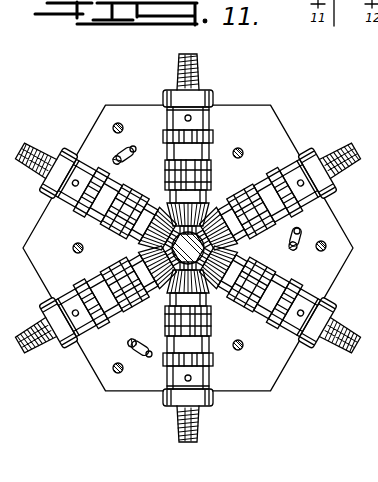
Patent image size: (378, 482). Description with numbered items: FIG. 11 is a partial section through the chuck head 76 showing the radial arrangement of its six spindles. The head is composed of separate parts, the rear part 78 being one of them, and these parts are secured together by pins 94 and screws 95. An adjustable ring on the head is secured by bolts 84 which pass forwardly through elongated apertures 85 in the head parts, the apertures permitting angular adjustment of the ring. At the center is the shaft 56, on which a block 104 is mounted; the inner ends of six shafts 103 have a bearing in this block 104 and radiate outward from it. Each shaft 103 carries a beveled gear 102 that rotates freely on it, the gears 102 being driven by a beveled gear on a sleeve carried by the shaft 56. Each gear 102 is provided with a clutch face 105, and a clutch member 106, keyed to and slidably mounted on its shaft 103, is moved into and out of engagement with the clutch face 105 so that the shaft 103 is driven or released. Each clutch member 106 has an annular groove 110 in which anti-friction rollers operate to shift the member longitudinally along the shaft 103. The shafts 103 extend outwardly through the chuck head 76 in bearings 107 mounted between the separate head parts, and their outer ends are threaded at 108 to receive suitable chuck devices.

The shaft 56 is at (133, 250).
The chuck head 76 is at (128, 105).
The rear part of the chuck head 78 is at (341, 20).
The bolts 84 is at (114, 149).
The elongated apertures 85 is at (116, 157).
The pins 94 is at (116, 123).
The screws 95 is at (241, 148).
The beveled gears 102 is at (239, 250).
The shafts 103 is at (289, 337).
The block 104 is at (212, 196).
The clutch faces 105 is at (160, 190).
The clutch members 106 is at (169, 136).
The bearings 107 is at (175, 89).
The threaded ends 108 is at (195, 62).
The annular grooves 110 is at (213, 143).